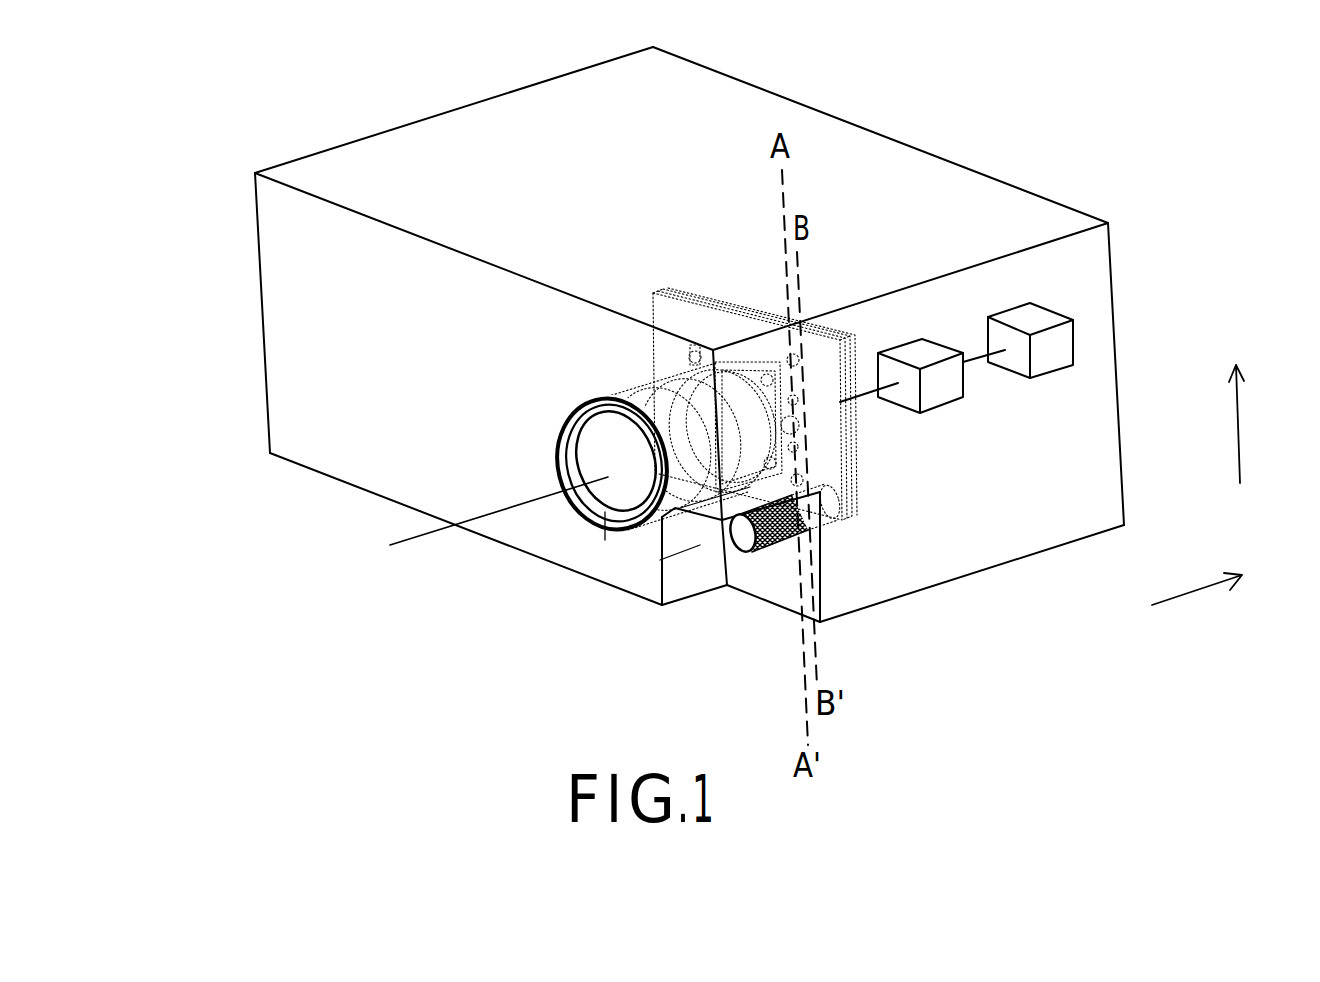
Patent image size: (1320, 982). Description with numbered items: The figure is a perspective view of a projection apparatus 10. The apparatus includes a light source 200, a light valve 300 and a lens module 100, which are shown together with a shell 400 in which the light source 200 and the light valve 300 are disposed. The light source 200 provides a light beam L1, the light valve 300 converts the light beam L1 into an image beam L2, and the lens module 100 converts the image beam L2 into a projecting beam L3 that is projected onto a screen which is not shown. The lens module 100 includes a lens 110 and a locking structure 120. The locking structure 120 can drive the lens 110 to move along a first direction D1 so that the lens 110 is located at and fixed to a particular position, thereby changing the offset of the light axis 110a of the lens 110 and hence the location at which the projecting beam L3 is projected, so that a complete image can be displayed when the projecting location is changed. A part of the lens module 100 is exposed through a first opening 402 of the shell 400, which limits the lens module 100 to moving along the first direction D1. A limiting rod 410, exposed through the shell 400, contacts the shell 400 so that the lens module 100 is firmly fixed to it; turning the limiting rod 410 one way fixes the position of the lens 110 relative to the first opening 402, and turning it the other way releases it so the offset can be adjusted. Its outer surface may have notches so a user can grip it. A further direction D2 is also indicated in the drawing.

The projection apparatus 10 is at (163, 210).
The lens module 100 is at (666, 546).
The lens 110 is at (705, 486).
The light axis 110a is at (403, 550).
The locking structure 120 is at (715, 488).
The light source 200 is at (1032, 328).
The light valve 300 is at (920, 356).
The shell 400 is at (945, 583).
The first opening 402 is at (610, 512).
The limiting rod 410 is at (778, 545).
The light beam L1 is at (970, 330).
The image beam L2 is at (866, 361).
The projecting beam L3 is at (496, 490).
The first direction D1 is at (1259, 424).
The second direction D2 is at (1197, 609).